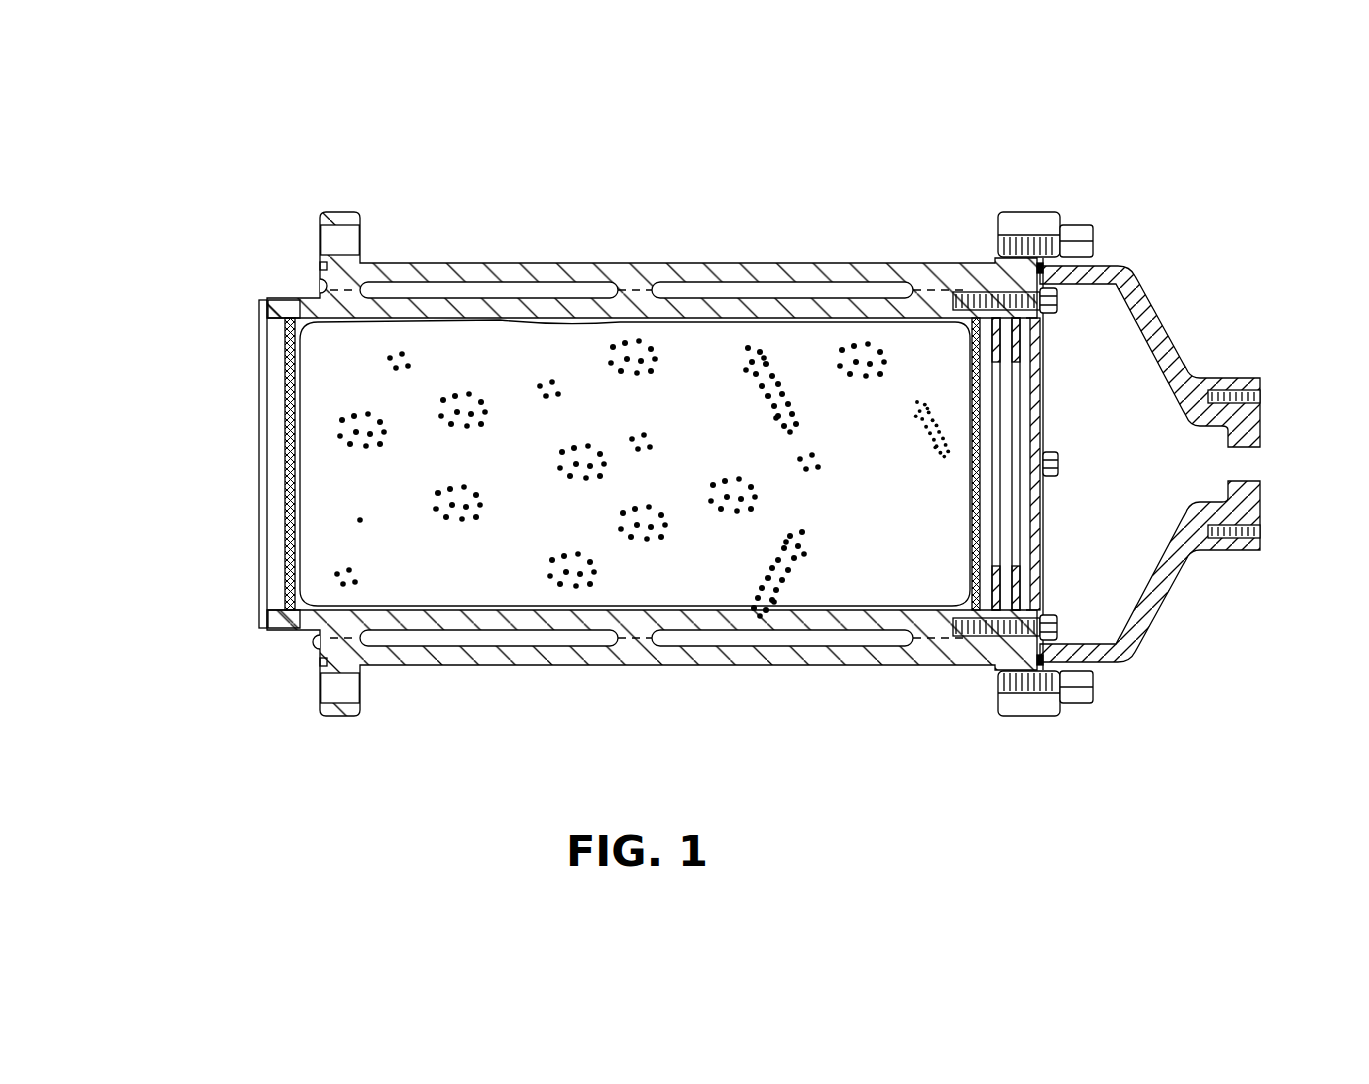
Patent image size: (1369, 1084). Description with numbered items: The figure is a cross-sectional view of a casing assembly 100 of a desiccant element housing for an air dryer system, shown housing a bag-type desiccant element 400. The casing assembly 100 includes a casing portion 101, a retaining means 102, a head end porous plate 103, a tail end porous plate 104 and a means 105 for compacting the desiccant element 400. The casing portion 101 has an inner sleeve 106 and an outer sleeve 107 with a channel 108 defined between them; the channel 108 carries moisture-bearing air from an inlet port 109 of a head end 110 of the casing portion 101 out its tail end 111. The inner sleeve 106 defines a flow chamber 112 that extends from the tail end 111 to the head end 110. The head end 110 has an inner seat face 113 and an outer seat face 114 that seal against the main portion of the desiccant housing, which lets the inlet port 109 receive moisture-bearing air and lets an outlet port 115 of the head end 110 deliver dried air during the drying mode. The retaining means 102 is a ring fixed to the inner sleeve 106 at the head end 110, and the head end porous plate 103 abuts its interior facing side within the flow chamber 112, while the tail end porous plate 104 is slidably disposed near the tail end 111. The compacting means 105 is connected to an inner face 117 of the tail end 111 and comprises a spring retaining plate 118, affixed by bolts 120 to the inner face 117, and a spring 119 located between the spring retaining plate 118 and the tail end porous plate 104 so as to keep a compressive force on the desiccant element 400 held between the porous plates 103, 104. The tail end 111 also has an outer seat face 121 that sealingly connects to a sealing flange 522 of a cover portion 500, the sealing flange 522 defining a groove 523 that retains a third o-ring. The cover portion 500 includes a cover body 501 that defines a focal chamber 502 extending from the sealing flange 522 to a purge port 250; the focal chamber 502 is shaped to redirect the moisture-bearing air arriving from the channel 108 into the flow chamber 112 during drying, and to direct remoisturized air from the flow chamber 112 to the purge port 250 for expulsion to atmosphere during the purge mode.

The casing assembly 100 is at (772, 242).
The casing portion 101 is at (630, 440).
The retaining means 102 is at (287, 608).
The head end porous plate 103 is at (285, 548).
The tail end porous plate 104 is at (970, 518).
The compacting means 105 is at (1050, 410).
The inner sleeve 106 is at (630, 465).
The outer sleeve 107 is at (630, 465).
The channel 108 is at (688, 290).
The inlet port 109 is at (318, 287).
The head end 110 is at (630, 459).
The tail end 111 is at (975, 262).
The flow chamber 112 is at (630, 459).
The inner seat face 113 is at (262, 335).
The outer seat face 114 is at (630, 459).
The outlet port 115 is at (238, 462).
The inner face 117 is at (1040, 318).
The spring retaining plate 118 is at (1038, 350).
The spring 119 is at (993, 578).
The bolts 120 is at (1060, 295).
The outer seat face 121 is at (1040, 700).
The purge port 250 is at (1197, 464).
The desiccant element 400 is at (530, 570).
The cover portion 500 is at (1197, 461).
The cover body 501 is at (1230, 545).
The focal chamber 502 is at (1197, 464).
The sealing flange 522 is at (1052, 215).
The groove 523 is at (1030, 660).